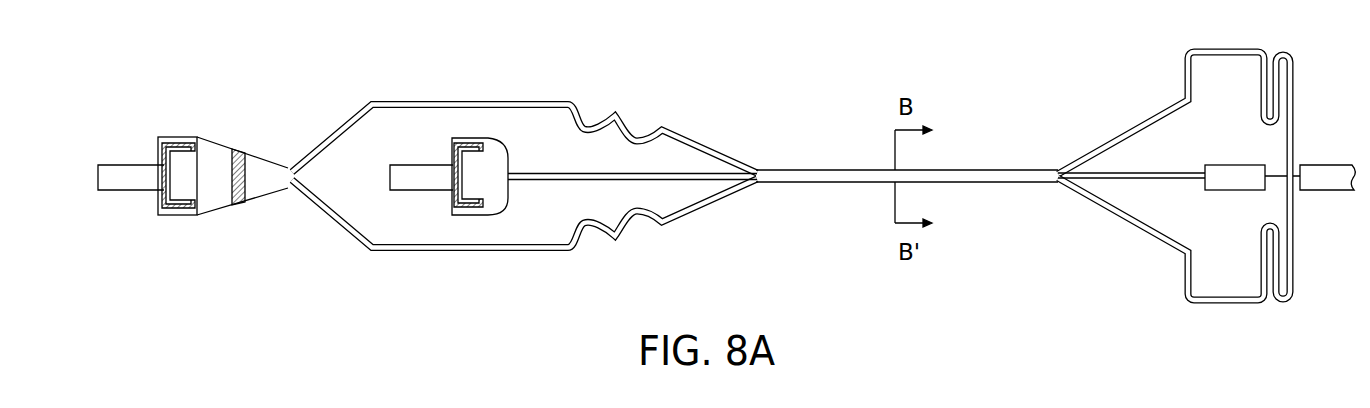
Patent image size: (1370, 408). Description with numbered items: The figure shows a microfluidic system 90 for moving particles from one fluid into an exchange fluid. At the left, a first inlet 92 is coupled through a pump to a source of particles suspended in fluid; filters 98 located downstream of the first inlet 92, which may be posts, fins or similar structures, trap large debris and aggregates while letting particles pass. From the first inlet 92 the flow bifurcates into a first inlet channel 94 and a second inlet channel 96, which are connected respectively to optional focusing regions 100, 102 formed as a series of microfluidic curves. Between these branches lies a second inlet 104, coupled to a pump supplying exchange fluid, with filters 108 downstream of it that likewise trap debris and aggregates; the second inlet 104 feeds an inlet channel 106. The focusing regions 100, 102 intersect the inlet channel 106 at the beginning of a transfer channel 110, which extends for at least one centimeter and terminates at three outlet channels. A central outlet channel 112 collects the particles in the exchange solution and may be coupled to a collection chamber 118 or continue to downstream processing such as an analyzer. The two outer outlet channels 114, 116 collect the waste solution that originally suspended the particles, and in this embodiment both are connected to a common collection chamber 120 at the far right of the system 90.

The microfluidic system 90 is at (469, 68).
The first inlet 92 is at (113, 164).
The first inlet channel 94 is at (318, 148).
The second inlet channel 96 is at (318, 212).
The filters 98 is at (170, 144).
The focusing region 100 is at (663, 124).
The focusing region 102 is at (663, 228).
The second inlet 104 is at (413, 164).
The inlet channel 106 is at (528, 173).
The filters 108 is at (473, 208).
The transfer channel 110 is at (810, 170).
The central outlet channel 112 is at (1172, 172).
The outer outlet channel 114 is at (1122, 130).
The outer outlet channel 116 is at (1122, 223).
The collection chamber 118 is at (1225, 165).
The common collection chamber 120 is at (1333, 164).